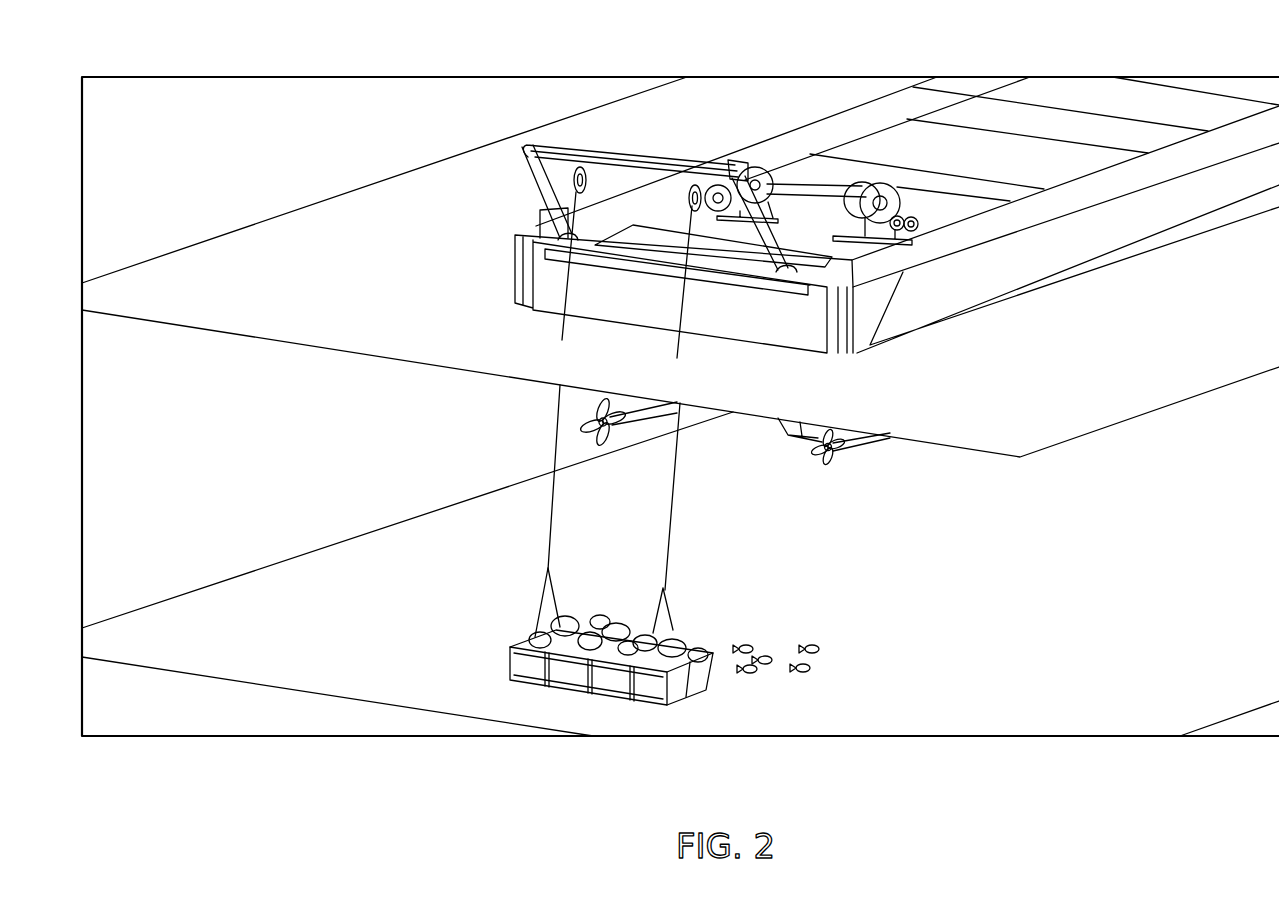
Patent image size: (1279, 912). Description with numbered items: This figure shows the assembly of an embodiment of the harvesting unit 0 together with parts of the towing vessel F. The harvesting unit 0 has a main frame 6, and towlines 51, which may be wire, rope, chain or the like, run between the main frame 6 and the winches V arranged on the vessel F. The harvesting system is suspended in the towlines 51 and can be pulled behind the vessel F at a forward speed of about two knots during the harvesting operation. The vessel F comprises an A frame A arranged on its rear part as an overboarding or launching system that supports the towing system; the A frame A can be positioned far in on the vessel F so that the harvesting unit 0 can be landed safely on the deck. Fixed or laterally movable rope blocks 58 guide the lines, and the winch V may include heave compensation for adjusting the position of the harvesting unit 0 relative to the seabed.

The vessel F is at (927, 96).
The A frame A is at (527, 143).
The winch V is at (907, 187).
The towlines 51 is at (553, 450).
The rope blocks 58 is at (553, 450).
The harvesting unit 0 is at (537, 605).
The main frame 6 is at (512, 657).